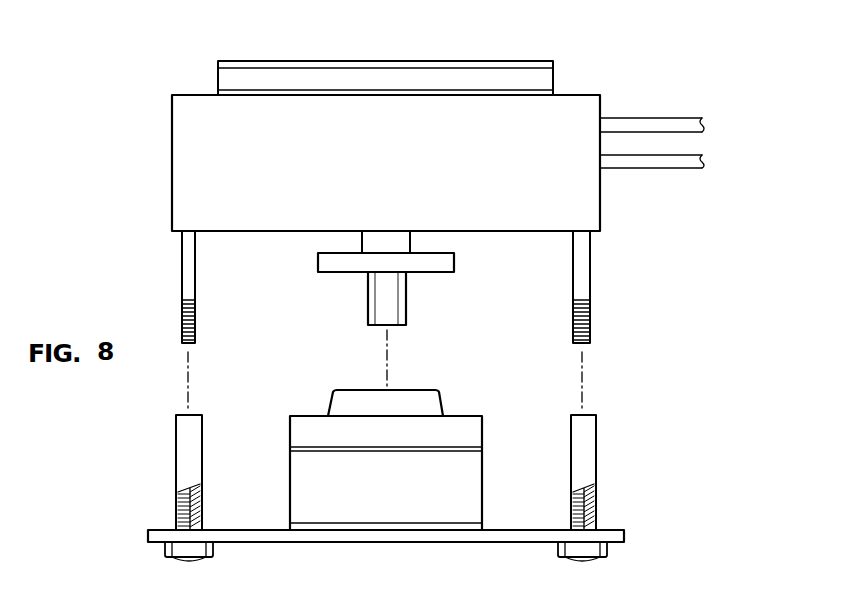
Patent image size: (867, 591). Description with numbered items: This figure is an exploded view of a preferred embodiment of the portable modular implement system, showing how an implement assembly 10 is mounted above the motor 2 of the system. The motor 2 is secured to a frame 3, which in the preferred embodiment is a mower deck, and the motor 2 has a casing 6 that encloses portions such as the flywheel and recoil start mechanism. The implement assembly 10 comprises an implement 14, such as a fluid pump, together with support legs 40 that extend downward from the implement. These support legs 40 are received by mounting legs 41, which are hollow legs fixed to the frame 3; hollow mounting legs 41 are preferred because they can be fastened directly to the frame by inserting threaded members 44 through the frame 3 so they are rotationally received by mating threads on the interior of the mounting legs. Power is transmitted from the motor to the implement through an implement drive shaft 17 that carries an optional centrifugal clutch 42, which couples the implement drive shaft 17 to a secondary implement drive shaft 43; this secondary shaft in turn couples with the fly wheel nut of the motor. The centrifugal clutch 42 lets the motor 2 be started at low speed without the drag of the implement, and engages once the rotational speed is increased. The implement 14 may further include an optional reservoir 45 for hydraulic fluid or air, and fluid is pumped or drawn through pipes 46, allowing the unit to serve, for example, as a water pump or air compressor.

The implement assembly 10 is at (640, 83).
The implement 14 is at (245, 150).
The reservoir 45 is at (513, 82).
The pipes 46 is at (688, 160).
The implement drive shaft 17 is at (390, 237).
The centrifugal clutch 42 is at (330, 266).
The secondary implement drive shaft 43 is at (368, 297).
The support legs 40 is at (182, 298).
The casing 6 is at (445, 415).
The motor 2 is at (388, 493).
The frame 3 is at (497, 537).
The mounting legs 41 is at (188, 460).
The threaded members 44 is at (187, 561).